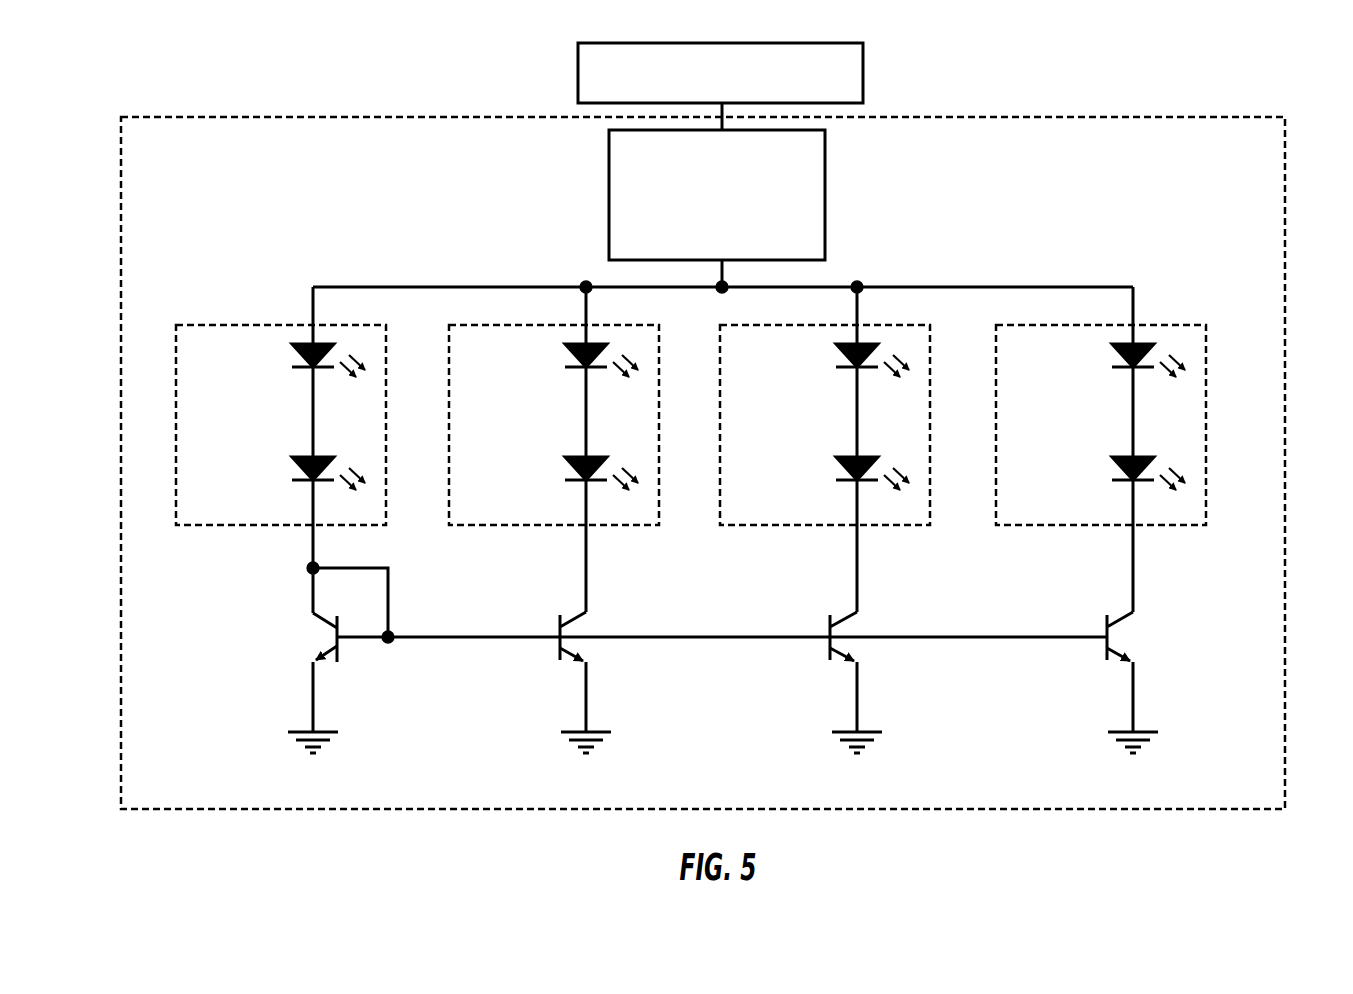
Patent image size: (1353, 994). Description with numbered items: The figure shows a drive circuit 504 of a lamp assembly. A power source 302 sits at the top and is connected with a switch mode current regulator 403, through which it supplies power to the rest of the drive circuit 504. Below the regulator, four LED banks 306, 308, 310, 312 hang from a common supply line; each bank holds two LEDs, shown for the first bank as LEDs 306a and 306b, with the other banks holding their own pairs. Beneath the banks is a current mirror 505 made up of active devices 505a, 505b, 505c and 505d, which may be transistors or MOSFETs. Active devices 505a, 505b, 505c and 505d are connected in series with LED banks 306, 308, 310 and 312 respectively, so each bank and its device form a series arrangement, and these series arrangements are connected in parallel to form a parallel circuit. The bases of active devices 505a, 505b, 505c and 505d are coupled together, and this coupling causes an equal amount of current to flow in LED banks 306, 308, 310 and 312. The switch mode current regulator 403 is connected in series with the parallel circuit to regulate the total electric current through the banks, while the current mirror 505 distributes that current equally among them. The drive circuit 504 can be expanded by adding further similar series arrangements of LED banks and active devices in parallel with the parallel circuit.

The power source 302 is at (863, 83).
The switch mode current regulator 403 is at (825, 196).
The LED bank 306 is at (199, 325).
The LED bank 308 is at (474, 325).
The LED bank 310 is at (745, 325).
The LED bank 312 is at (1021, 325).
The LED 306a is at (306, 459).
The LED 306b is at (306, 346).
The drive circuit 504 is at (1285, 518).
The current mirror 505 is at (312, 637).
The active device 505a is at (341, 647).
The active device 505b is at (556, 650).
The active device 505c is at (826, 650).
The active device 505d is at (1103, 650).